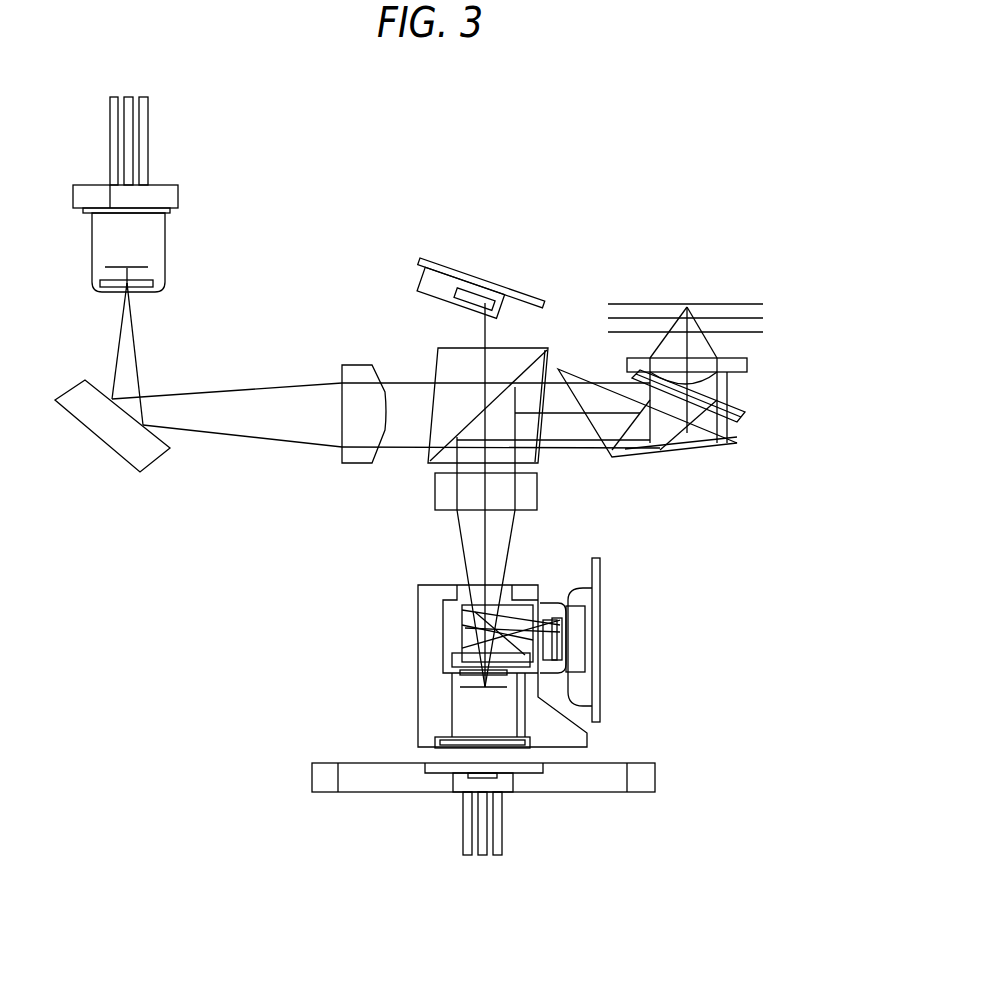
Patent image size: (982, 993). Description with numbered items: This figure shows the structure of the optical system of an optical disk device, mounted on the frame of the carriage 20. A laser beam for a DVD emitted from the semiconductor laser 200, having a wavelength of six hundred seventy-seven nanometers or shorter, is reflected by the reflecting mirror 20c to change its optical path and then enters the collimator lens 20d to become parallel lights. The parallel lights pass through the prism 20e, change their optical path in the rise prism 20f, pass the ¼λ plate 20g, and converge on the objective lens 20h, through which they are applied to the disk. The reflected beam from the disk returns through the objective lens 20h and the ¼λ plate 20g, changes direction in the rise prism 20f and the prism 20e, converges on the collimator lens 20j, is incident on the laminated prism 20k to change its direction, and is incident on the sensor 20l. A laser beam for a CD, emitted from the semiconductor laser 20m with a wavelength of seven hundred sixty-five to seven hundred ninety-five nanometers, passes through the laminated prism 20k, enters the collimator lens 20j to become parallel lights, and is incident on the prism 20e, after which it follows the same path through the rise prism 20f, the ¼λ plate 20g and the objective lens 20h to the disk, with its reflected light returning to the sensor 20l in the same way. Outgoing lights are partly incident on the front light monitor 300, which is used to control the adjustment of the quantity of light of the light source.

The semiconductor laser for a DVD 200 is at (157, 233).
The front light monitor 300 is at (497, 285).
The carriage 20 is at (762, 310).
The reflecting mirror 20c is at (96, 425).
The collimator lens 20d is at (342, 463).
The prism 20e is at (448, 362).
The rise prism 20f is at (660, 450).
The ¼λ plate 20g is at (742, 422).
The objective lens 20h is at (727, 373).
The collimator lens 20j is at (435, 497).
The laminated prism 20k is at (460, 618).
The sensor 20l is at (565, 635).
The semiconductor laser for a CD 20m is at (537, 722).